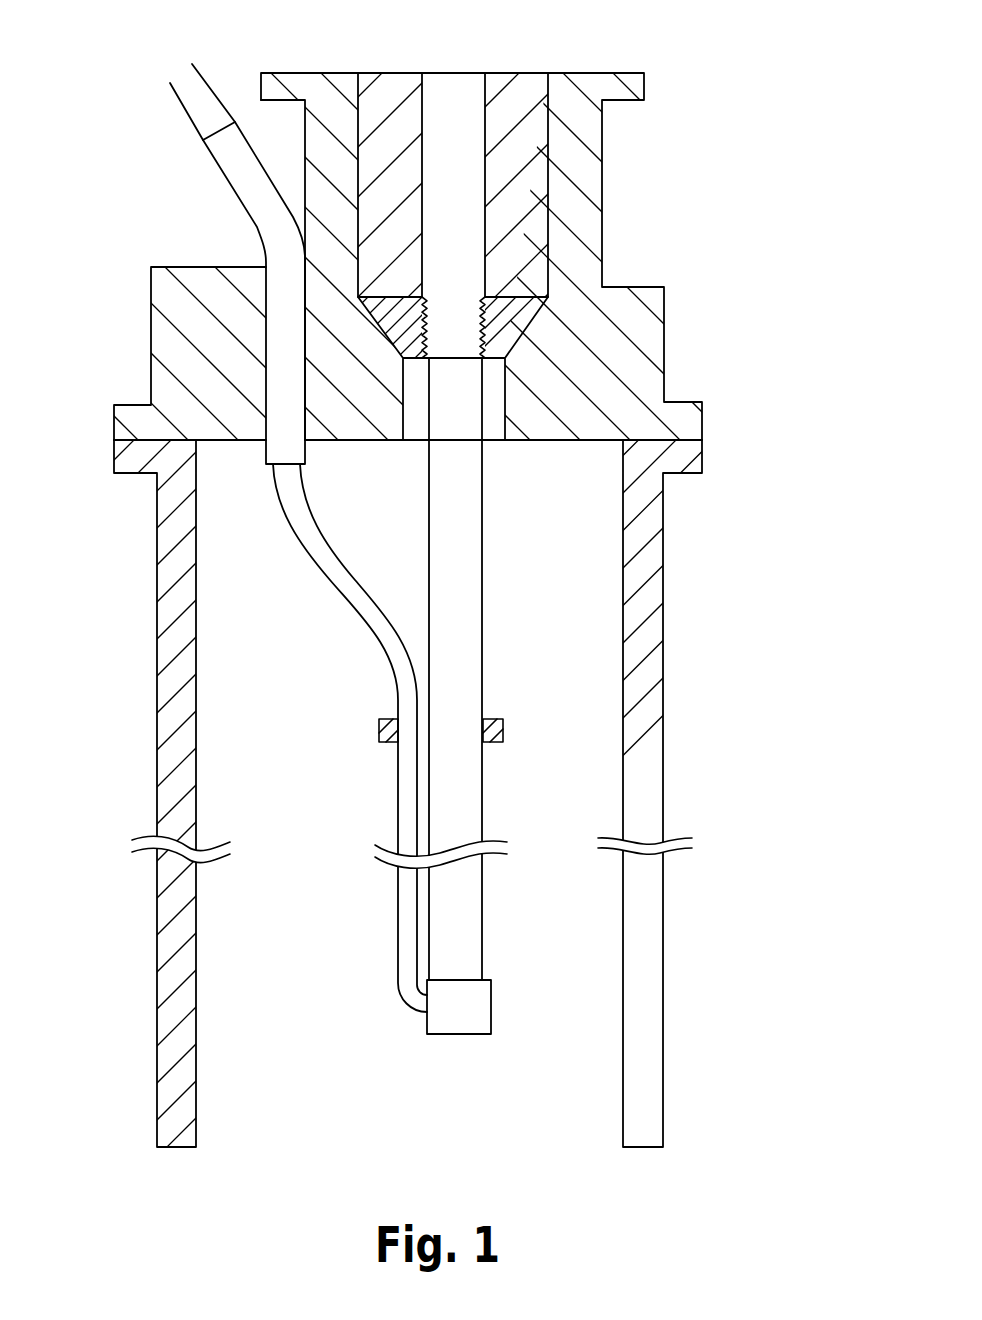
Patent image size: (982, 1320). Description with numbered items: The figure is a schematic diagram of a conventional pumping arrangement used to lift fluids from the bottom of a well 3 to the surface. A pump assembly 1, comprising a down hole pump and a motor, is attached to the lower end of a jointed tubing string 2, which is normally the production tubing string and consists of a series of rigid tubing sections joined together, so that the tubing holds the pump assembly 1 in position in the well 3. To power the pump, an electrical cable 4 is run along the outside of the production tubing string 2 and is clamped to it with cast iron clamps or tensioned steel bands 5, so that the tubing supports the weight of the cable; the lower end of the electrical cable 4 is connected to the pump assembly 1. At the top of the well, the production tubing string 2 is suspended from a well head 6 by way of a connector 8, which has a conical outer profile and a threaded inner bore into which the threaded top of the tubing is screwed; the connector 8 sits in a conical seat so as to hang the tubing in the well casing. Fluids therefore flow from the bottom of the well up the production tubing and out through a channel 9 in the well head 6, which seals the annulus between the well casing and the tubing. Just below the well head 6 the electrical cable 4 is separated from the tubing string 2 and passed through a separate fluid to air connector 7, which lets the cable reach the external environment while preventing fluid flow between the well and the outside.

The pump assembly 1 is at (458, 1015).
The jointed tubing string 2 is at (460, 557).
The well 3 is at (271, 1080).
The electrical cable 4 is at (348, 598).
The clamps or tensioned steel bands 5 is at (379, 730).
The well head 6 is at (580, 355).
The fluid to air connector 7 is at (260, 213).
The connector 8 is at (510, 323).
The channel 9 is at (450, 117).